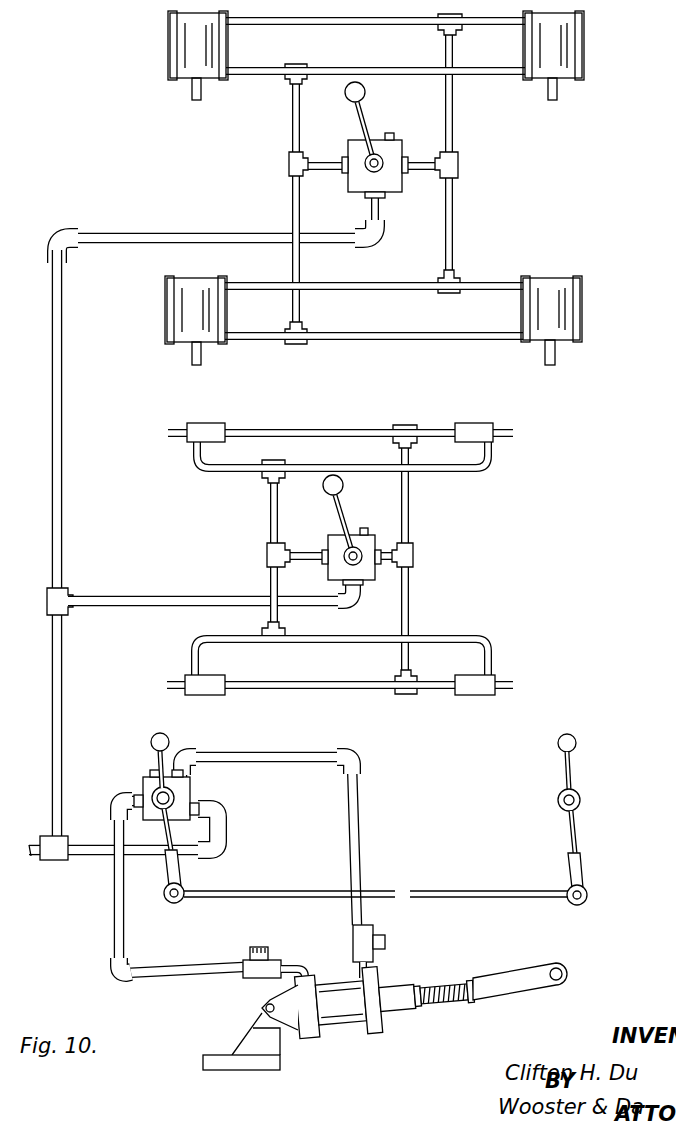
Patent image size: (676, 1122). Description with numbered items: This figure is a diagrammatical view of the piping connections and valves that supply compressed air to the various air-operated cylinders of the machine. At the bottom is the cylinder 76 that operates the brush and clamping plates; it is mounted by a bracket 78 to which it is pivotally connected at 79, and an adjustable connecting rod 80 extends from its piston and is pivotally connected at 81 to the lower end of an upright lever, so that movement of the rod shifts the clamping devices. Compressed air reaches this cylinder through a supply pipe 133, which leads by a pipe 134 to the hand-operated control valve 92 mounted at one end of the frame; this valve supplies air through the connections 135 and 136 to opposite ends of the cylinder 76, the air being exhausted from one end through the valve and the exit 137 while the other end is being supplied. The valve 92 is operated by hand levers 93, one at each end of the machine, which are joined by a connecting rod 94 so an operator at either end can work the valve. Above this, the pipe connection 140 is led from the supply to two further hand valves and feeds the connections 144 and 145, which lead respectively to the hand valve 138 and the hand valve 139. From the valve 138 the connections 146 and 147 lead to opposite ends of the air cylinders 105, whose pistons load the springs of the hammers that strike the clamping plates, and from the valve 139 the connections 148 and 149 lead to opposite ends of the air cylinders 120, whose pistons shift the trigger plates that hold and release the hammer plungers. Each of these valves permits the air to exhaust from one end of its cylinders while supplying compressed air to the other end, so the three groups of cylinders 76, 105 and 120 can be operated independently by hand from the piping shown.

The cylinder 76 is at (355, 1035).
The bracket 78 is at (281, 1050).
The pivotal connection 79 is at (265, 1008).
The adjustable connecting rod 80 is at (460, 990).
The pivotal connection 81 is at (562, 972).
The control valve 92 is at (190, 792).
The hand-operated levers 93 is at (186, 742).
The connecting rod 94 is at (437, 892).
The air cylinder 105 is at (170, 55).
The air cylinder 120 is at (213, 424).
The supply pipe 133 is at (33, 862).
The pipe 134 is at (90, 862).
The connection 135 is at (123, 942).
The connection 136 is at (358, 852).
The exit 137 is at (150, 770).
The hand valve 138 is at (396, 192).
The hand valve 139 is at (365, 586).
The pipe connection 140 is at (50, 704).
The connection 144 is at (208, 233).
The connection 145 is at (190, 585).
The connection 146 is at (291, 125).
The connection 147 is at (454, 140).
The connection 148 is at (267, 517).
The connection 149 is at (412, 520).